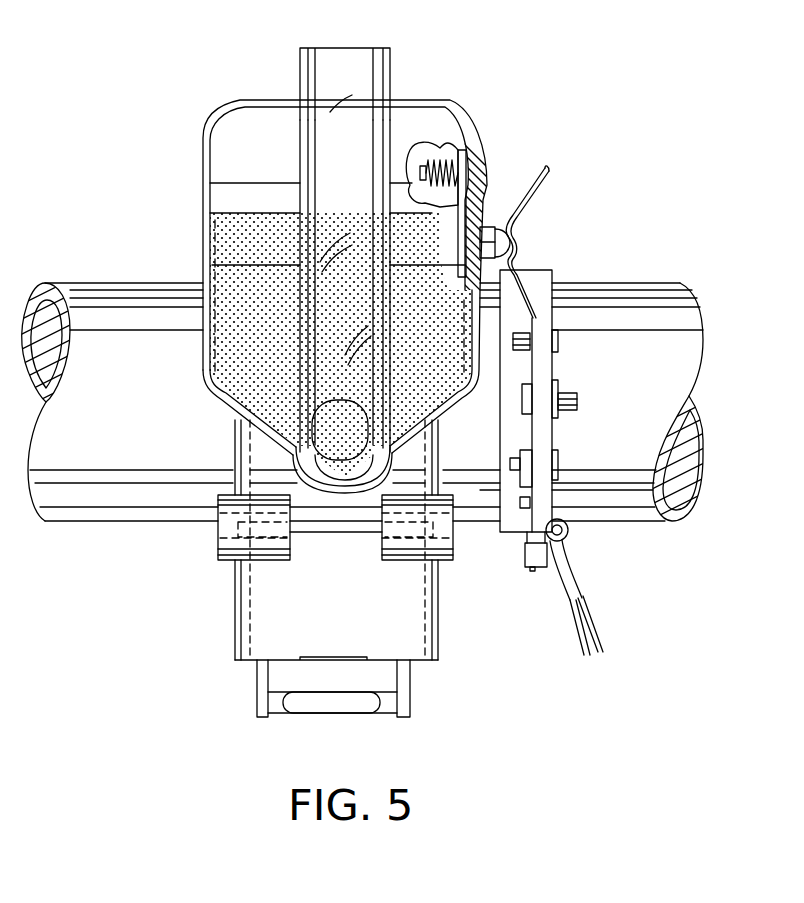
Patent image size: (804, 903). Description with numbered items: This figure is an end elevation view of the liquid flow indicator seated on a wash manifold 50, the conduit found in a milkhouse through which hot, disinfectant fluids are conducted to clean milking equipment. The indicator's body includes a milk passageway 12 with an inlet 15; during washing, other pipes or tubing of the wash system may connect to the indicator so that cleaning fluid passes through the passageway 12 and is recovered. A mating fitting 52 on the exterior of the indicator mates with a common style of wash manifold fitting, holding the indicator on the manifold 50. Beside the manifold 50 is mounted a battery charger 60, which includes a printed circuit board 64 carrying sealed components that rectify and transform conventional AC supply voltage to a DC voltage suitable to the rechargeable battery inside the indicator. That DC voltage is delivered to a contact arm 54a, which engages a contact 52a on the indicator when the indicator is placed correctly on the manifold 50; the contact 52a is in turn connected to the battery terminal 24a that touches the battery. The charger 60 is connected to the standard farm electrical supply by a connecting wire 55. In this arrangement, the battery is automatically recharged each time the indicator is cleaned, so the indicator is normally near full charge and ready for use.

The milk passageway 12 is at (372, 76).
The inlet 15 is at (323, 48).
The positive battery terminal 24a is at (460, 138).
The wash manifold 50 is at (637, 281).
The mating fitting 52 is at (218, 557).
The contact 52a is at (494, 228).
The contact arm 54a is at (552, 181).
The connecting wire 55 is at (567, 587).
The battery charger 60 is at (503, 533).
The printed circuit board 64 is at (553, 320).